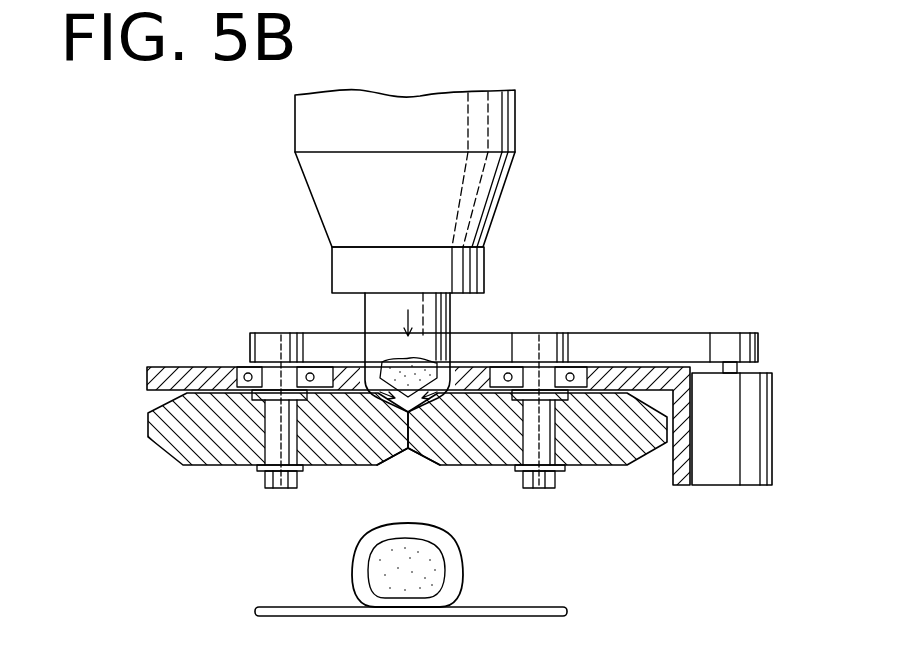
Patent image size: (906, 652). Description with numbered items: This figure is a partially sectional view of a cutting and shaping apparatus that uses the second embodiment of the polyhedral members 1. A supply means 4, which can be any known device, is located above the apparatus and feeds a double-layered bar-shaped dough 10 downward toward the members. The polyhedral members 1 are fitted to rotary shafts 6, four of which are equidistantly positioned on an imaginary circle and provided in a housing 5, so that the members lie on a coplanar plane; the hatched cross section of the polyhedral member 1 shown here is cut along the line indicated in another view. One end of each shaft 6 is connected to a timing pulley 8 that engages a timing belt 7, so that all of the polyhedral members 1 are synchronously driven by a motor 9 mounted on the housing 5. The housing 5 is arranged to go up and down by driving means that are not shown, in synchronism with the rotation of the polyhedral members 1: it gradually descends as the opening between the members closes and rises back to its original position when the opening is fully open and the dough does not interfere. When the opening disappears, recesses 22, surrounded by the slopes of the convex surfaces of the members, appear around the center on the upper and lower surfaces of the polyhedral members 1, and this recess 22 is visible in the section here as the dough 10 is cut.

The polyhedral member 1 is at (613, 468).
The means to supply dough 4 is at (478, 201).
The housing 5 is at (678, 487).
The rotary shaft 6 is at (268, 448).
The timing belt 7 is at (662, 333).
The timing pulley 8 is at (277, 342).
The motor 9 is at (740, 462).
The double-layered bar-shaped dough 10 is at (447, 310).
The recess 22 is at (407, 460).